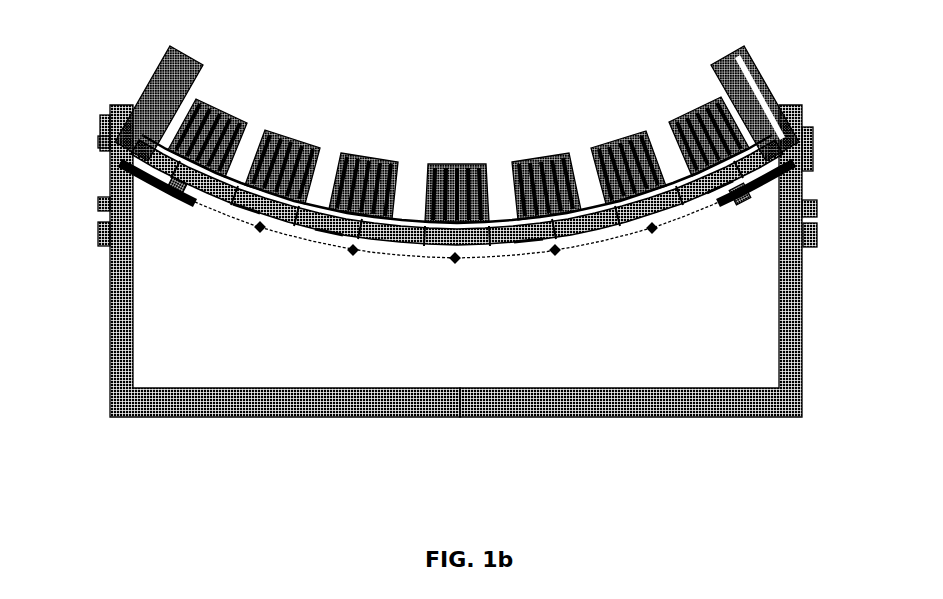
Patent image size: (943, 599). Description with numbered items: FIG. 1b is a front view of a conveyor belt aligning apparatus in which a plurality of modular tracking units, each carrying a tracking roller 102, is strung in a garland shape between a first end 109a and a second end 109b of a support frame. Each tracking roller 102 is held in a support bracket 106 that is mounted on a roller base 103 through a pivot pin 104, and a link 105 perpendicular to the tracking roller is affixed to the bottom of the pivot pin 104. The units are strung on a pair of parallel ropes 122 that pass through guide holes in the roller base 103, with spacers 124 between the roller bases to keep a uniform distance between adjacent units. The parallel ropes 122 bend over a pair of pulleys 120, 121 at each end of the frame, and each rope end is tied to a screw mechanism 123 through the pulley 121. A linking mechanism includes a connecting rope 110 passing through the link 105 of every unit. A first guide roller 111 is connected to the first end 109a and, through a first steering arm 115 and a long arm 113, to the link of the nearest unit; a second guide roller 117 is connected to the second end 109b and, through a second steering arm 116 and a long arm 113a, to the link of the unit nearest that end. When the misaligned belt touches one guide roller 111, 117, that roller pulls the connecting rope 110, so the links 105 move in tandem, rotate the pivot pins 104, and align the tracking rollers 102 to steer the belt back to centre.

The tracking roller 102 is at (310, 130).
The roller base 103 is at (250, 206).
The pivot pin 104 is at (346, 245).
The link 105 is at (440, 258).
The support bracket 106 is at (232, 126).
The first end 109a is at (112, 327).
The second end 109b is at (790, 323).
The connecting rope 110 is at (535, 255).
The first guide roller 111 is at (160, 80).
The long arm 113 is at (152, 190).
The long arm 113a is at (745, 203).
The first steering arm 115 is at (720, 200).
The second steering arm 116 is at (178, 190).
The second guide roller 117 is at (748, 88).
The pulley 120 is at (105, 128).
The pulley 121 is at (815, 147).
The parallel ropes 122 is at (100, 165).
The screw mechanism 123 is at (100, 205).
The spacers 124 is at (603, 228).